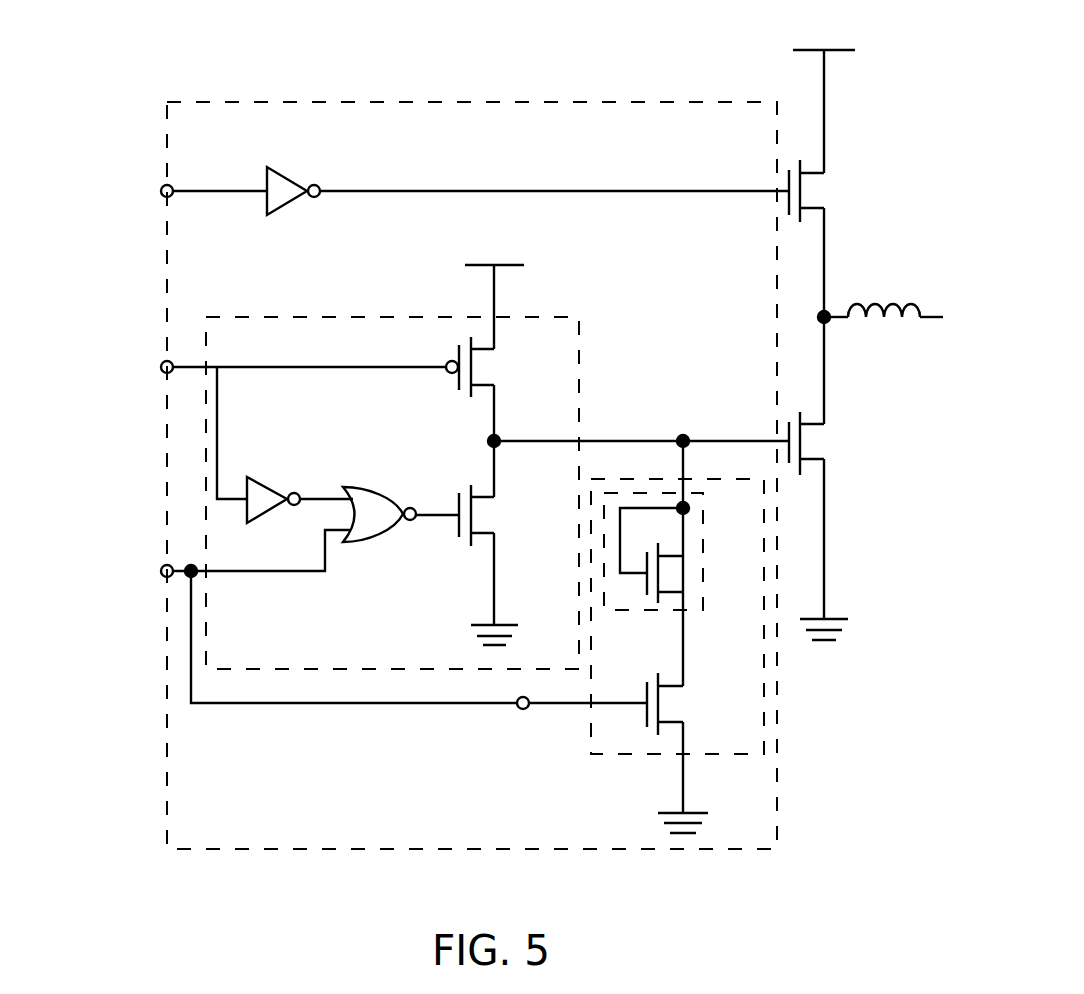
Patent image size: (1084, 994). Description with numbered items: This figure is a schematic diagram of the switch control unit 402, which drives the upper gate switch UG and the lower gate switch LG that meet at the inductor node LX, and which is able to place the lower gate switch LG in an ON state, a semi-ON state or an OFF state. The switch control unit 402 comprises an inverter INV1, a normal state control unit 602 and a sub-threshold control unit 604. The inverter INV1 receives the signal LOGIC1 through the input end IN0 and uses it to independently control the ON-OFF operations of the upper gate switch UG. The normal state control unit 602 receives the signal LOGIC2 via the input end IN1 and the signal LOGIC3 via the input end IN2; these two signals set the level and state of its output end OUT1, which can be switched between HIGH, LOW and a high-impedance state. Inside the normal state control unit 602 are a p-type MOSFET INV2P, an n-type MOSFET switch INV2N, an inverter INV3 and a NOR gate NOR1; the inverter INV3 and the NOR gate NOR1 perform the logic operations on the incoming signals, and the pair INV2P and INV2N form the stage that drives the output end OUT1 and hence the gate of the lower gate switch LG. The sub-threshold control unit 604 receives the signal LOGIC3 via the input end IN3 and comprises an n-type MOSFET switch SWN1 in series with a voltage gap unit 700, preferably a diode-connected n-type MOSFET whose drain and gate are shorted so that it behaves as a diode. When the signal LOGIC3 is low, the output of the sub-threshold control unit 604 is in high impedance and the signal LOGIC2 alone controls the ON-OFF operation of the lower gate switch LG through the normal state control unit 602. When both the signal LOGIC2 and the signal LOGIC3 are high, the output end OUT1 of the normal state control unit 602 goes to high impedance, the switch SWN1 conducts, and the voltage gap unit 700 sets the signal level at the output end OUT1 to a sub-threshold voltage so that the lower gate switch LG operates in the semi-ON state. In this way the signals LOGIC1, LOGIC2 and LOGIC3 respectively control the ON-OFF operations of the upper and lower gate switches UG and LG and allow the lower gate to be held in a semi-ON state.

The switch control unit 402 is at (507, 102).
The normal state control unit 602 is at (576, 317).
The sub-threshold control unit 604 is at (614, 757).
The voltage gap unit 700 is at (703, 573).
The signal LOGIC1 is at (106, 190).
The signal LOGIC2 is at (105, 366).
The signal LOGIC3 is at (117, 570).
The input end IN0 is at (162, 186).
The input end IN1 is at (162, 362).
The input end IN2 is at (162, 566).
The input end IN3 is at (419, 657).
The inverter INV1 is at (281, 177).
The inverter INV2P is at (508, 381).
The switch INV2N is at (516, 565).
The inverter INV3 is at (262, 478).
The NOR gate NOR1 is at (375, 489).
The output end OUT1 is at (638, 542).
The upper gate switch UG is at (829, 183).
The lower gate switch LG is at (829, 478).
The LX node LX is at (880, 295).
The switch SWN1 is at (702, 753).